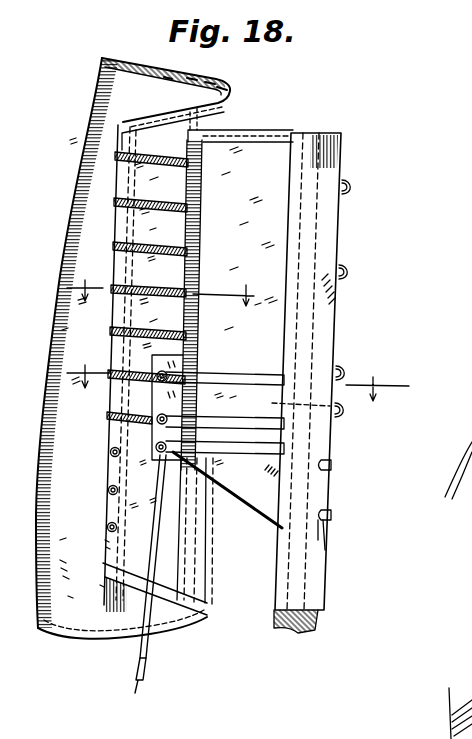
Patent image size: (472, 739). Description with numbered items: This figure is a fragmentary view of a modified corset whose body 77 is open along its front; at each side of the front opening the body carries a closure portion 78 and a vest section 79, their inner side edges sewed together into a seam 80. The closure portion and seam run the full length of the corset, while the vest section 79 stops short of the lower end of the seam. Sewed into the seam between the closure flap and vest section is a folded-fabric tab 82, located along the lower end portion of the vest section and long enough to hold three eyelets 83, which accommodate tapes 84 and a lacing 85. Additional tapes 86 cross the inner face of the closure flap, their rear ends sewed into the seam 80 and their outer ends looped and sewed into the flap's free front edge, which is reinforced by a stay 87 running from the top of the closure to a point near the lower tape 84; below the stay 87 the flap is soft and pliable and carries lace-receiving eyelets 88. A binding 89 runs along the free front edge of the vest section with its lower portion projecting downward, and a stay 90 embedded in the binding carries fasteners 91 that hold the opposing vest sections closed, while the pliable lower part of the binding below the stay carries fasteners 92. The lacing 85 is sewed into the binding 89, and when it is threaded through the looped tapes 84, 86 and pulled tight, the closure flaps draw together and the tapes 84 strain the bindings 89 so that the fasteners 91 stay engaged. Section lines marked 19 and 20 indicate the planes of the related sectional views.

The body 77 is at (100, 136).
The closure portions 78 is at (154, 131).
The vest sections 79 is at (257, 163).
The seam 80 is at (192, 501).
The tab 82 is at (184, 358).
The eyelets 83 is at (152, 446).
The tapes 84 is at (240, 381).
The lacing 85 is at (251, 453).
The additional tapes 86 is at (162, 333).
The stay 87 is at (114, 389).
The lace-receiving eyelets 88 is at (108, 525).
The binding 89 is at (322, 178).
The stay 90 is at (288, 400).
The fasteners 91 is at (341, 405).
The fasteners 92 is at (364, 513).
The section line 19 is at (238, 371).
The section line 20 is at (163, 280).